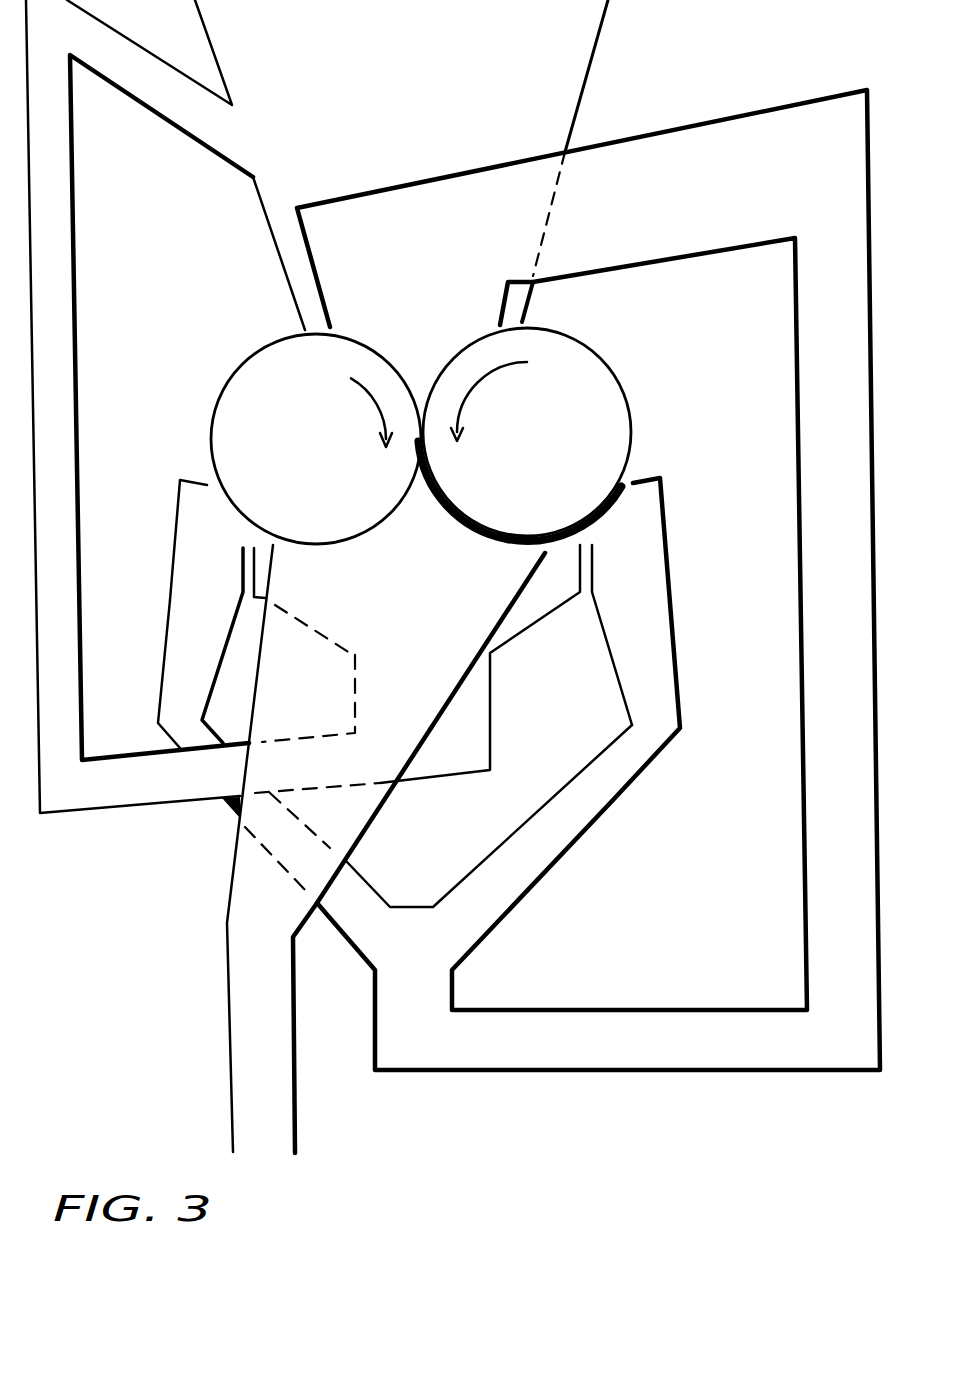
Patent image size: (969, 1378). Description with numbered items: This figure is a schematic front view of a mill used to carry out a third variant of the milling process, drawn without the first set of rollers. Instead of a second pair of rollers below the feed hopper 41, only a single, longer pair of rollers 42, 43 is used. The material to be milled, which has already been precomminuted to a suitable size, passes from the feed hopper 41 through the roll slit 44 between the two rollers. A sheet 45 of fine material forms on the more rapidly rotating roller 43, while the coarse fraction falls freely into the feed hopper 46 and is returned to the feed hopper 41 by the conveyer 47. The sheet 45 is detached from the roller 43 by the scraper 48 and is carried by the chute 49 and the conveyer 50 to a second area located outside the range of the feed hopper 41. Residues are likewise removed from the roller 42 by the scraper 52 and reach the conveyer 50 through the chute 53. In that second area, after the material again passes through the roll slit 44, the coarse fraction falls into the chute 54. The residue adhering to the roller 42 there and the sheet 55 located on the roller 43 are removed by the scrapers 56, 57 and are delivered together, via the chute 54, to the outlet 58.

The feed hopper 41 is at (582, 28).
The roller 42 is at (273, 353).
The roller 43 is at (577, 365).
The roll slit 44 is at (422, 410).
The sheet 45 is at (612, 513).
The feed hopper 46 is at (550, 600).
The conveyer 47 is at (65, 240).
The scraper 48 is at (650, 473).
The chute 49 is at (600, 798).
The conveyer 50 is at (812, 560).
The scraper 52 is at (185, 478).
The chute 53 is at (177, 578).
The chute 54 is at (365, 803).
The sheet 55 is at (463, 525).
The scraper 56 is at (537, 563).
The scraper 57 is at (273, 562).
The outlet 58 is at (245, 1025).